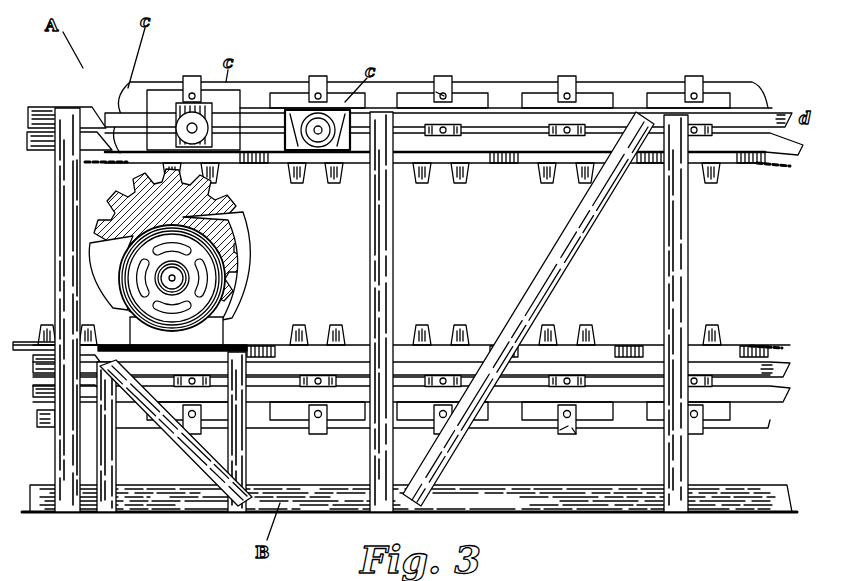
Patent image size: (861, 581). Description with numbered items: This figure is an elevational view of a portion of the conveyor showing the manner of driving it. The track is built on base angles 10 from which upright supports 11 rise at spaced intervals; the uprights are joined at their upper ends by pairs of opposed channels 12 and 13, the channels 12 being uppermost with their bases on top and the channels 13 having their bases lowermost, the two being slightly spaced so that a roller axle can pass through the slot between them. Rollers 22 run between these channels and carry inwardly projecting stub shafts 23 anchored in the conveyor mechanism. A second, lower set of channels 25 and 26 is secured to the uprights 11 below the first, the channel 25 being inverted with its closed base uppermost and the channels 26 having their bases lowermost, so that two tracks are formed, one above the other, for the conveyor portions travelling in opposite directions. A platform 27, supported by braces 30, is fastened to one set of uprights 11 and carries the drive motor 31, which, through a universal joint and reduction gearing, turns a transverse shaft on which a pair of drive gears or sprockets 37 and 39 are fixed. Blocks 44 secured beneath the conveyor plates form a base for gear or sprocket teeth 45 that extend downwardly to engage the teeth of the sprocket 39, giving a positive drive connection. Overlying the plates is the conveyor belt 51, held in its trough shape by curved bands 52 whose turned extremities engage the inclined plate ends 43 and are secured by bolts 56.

The base angles 10 is at (530, 495).
The upright supports 11 is at (57, 452).
The channels 12 is at (38, 107).
The channels 13 is at (32, 150).
The rollers 22 is at (182, 102).
The stub shafts 23 is at (213, 110).
The channel 25 is at (613, 372).
The channels 26 is at (643, 386).
The platform 27 is at (247, 343).
The braces 30 is at (240, 448).
The drive motor 31 is at (220, 268).
The drive gear or sprocket 37 is at (97, 216).
The drive gear or sprocket 39 is at (237, 232).
The inclined ends of the plates 43 is at (407, 95).
The blocks 44 is at (620, 180).
The gear or sprocket teeth 45 is at (147, 170).
The conveyor belt 51 is at (608, 82).
The bands 52 is at (197, 77).
The bolts 56 is at (440, 95).